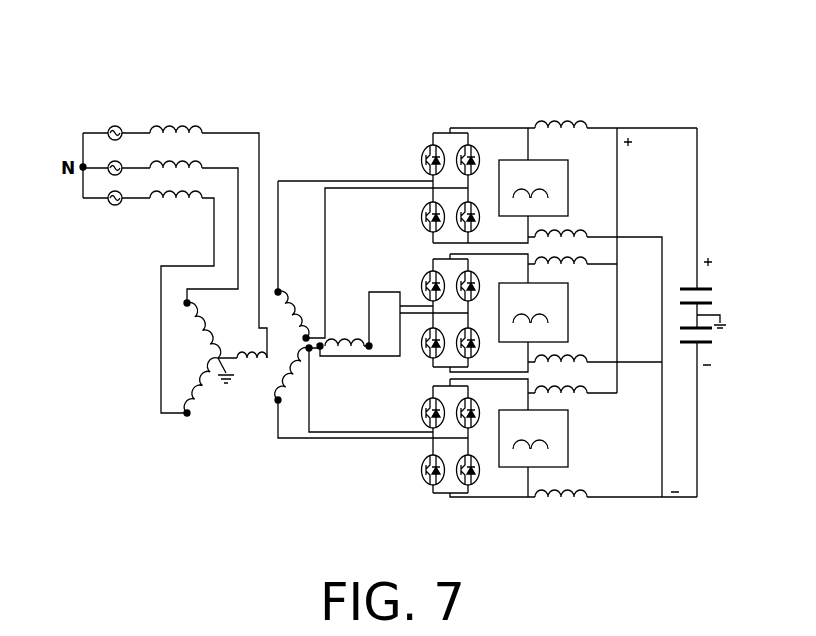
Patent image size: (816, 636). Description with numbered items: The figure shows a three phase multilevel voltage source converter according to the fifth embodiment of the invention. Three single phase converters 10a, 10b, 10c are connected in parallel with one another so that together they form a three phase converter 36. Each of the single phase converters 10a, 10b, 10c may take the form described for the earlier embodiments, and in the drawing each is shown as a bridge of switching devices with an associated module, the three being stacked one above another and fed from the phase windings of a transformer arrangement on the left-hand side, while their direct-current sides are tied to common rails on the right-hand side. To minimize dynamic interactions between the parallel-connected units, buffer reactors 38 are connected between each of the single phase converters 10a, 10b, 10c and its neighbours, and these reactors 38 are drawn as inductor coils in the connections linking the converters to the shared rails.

The three phase converter 36 is at (291, 128).
The single phase converter 10a is at (495, 146).
The single phase converter 10b is at (506, 279).
The single phase converter 10c is at (498, 486).
The buffer reactor 38 is at (590, 127).